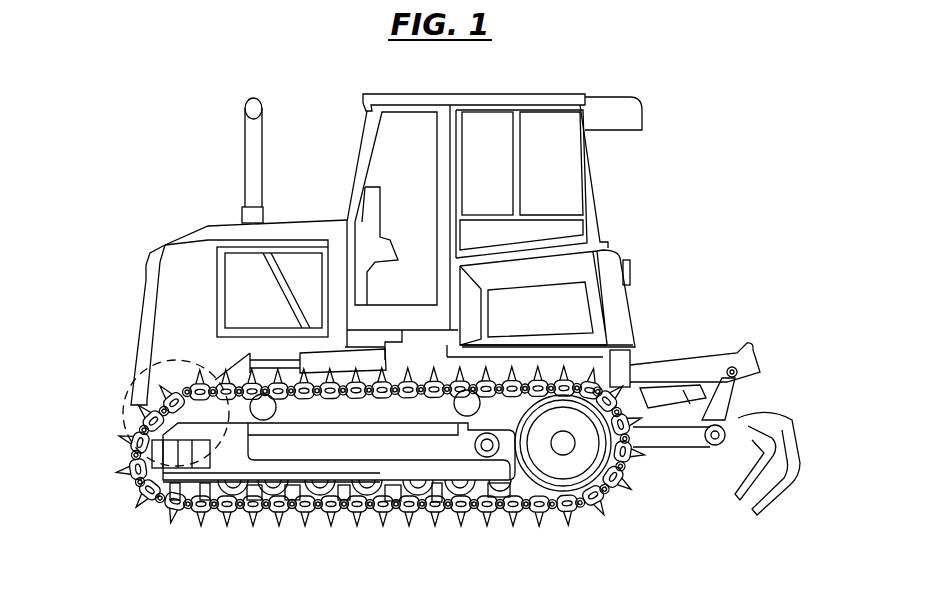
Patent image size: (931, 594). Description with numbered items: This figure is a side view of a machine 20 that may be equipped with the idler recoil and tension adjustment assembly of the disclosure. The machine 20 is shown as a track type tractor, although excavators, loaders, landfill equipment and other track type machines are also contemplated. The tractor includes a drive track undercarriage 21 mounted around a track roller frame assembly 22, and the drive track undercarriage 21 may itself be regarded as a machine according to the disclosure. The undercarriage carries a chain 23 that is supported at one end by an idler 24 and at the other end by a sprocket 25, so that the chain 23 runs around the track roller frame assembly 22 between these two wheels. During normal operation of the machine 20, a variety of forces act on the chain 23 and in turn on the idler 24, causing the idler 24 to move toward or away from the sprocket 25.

The machine 20 is at (628, 233).
The drive track undercarriage 21 is at (260, 527).
The track roller frame assembly 22 is at (407, 446).
The chain 23 is at (140, 503).
The idler 24 is at (122, 368).
The sprocket 25 is at (563, 508).